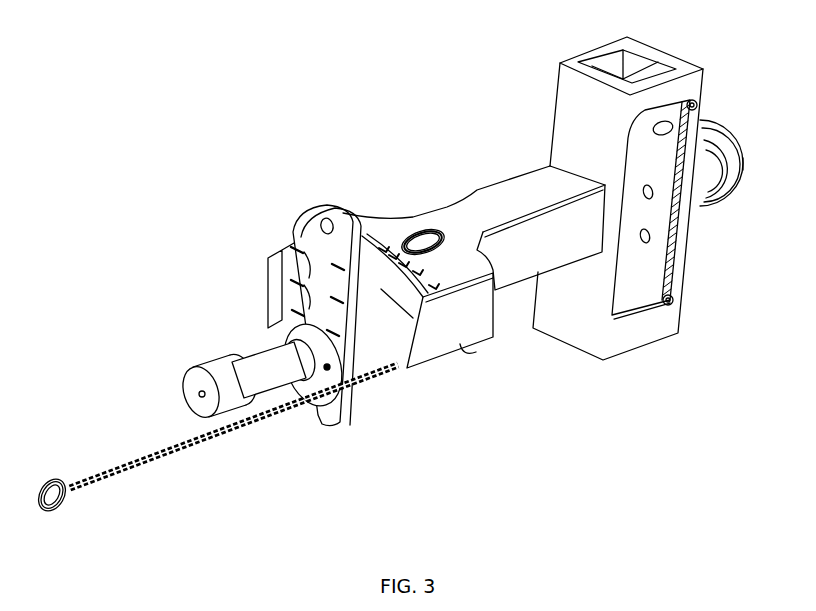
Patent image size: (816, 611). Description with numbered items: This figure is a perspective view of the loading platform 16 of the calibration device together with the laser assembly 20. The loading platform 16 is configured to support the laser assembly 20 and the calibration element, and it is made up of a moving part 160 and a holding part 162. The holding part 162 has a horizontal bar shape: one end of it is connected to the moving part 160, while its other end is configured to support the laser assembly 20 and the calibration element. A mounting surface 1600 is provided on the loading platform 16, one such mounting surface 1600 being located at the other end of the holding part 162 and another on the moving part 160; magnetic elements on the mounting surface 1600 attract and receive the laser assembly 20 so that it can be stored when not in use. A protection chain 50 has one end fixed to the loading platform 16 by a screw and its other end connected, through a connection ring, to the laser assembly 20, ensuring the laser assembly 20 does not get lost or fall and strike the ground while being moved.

The loading platform 16 is at (437, 96).
The moving part 160 is at (571, 128).
The holding part 162 is at (549, 205).
The mounting surface 1600 is at (666, 270).
The laser assembly 20 is at (283, 252).
The protection chain 50 is at (163, 450).